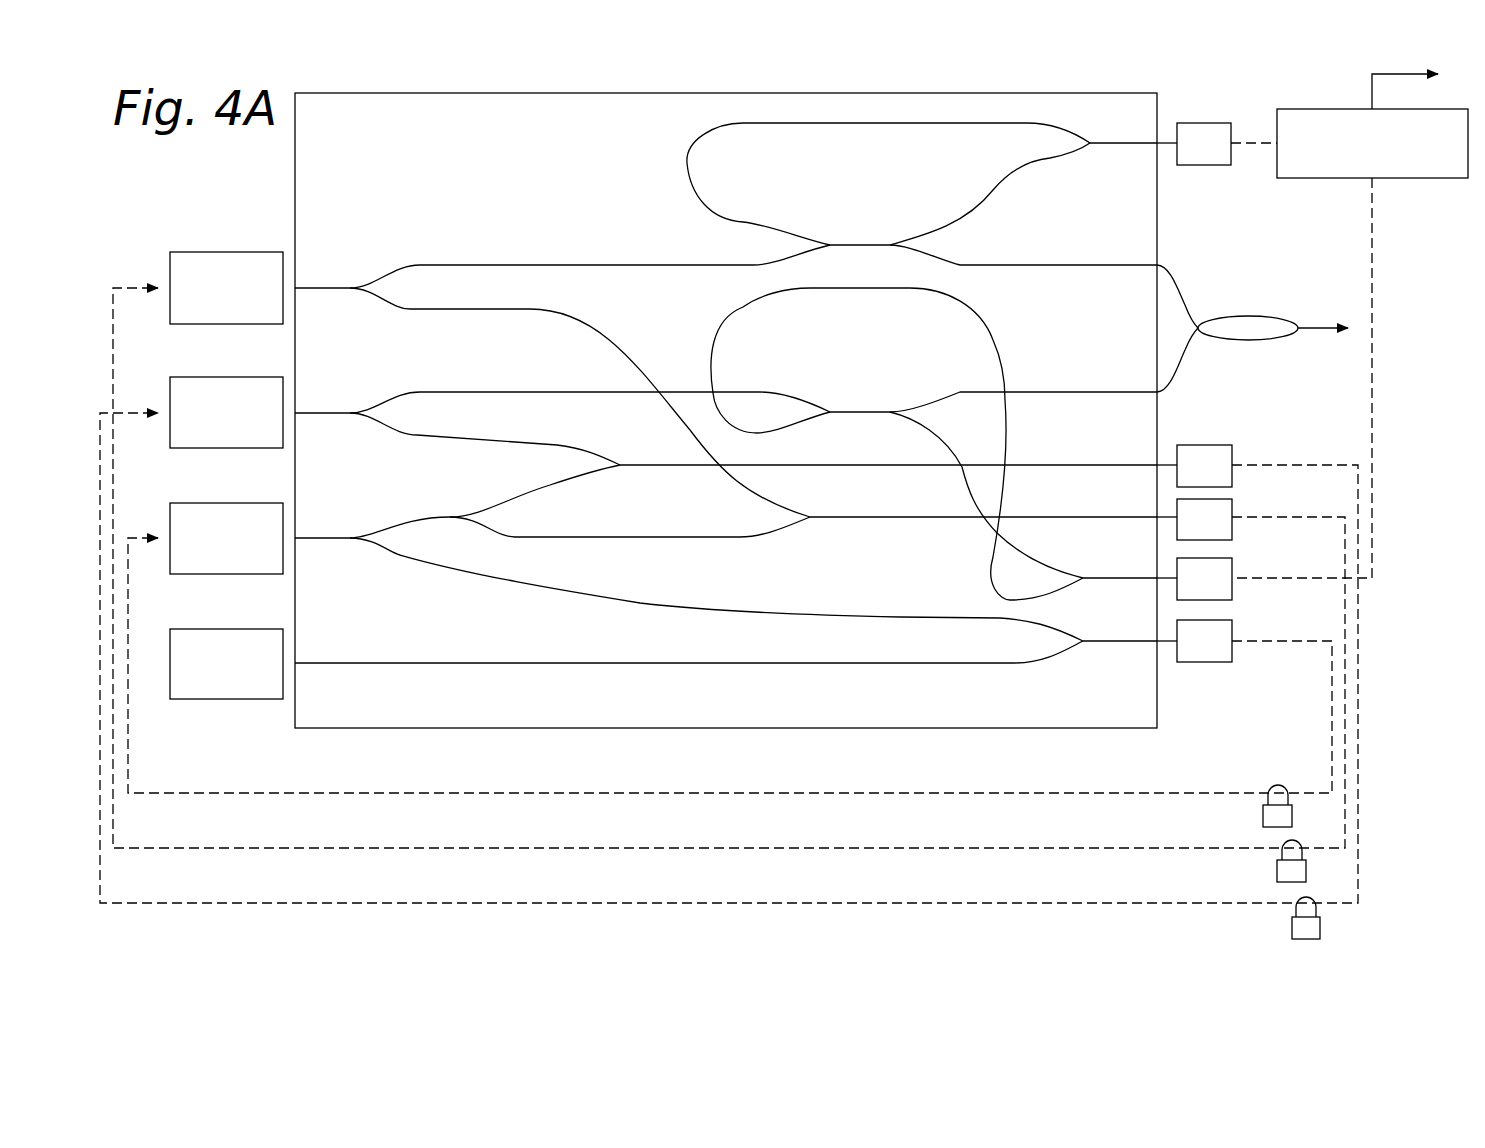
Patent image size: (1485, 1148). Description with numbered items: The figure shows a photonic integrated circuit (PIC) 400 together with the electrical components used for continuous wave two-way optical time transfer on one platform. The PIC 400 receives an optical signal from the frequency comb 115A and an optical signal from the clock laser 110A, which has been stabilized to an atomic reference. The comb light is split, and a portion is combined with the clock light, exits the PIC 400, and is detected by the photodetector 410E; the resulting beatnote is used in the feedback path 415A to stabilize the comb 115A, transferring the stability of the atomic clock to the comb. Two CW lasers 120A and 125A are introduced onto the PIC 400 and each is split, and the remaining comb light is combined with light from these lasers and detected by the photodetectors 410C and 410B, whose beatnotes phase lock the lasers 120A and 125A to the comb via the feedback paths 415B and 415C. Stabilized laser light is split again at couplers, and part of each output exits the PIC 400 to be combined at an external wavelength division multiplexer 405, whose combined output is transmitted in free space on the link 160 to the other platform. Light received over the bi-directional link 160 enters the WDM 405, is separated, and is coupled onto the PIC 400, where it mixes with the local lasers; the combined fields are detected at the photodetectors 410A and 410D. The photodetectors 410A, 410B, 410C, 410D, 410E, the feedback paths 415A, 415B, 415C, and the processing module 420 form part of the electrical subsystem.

The photonic integrated circuit (PIC) 400 is at (383, 93).
The CW laser 120A is at (266, 252).
The CW laser 125A is at (270, 377).
The frequency comb 115A is at (270, 503).
The clock laser 110A is at (270, 629).
The photodetector 410A is at (1204, 122).
The photodetector 410B is at (1232, 452).
The photodetector 410C is at (1232, 506).
The photodetector 410D is at (1232, 565).
The photodetector 410E is at (1232, 627).
The processing module 420 is at (1390, 180).
The wavelength division multiplexer (WDM) 405 is at (1246, 315).
The link 160 is at (1327, 283).
The feedback path 415A is at (897, 793).
The feedback path 415B is at (897, 848).
The feedback path 415C is at (897, 903).